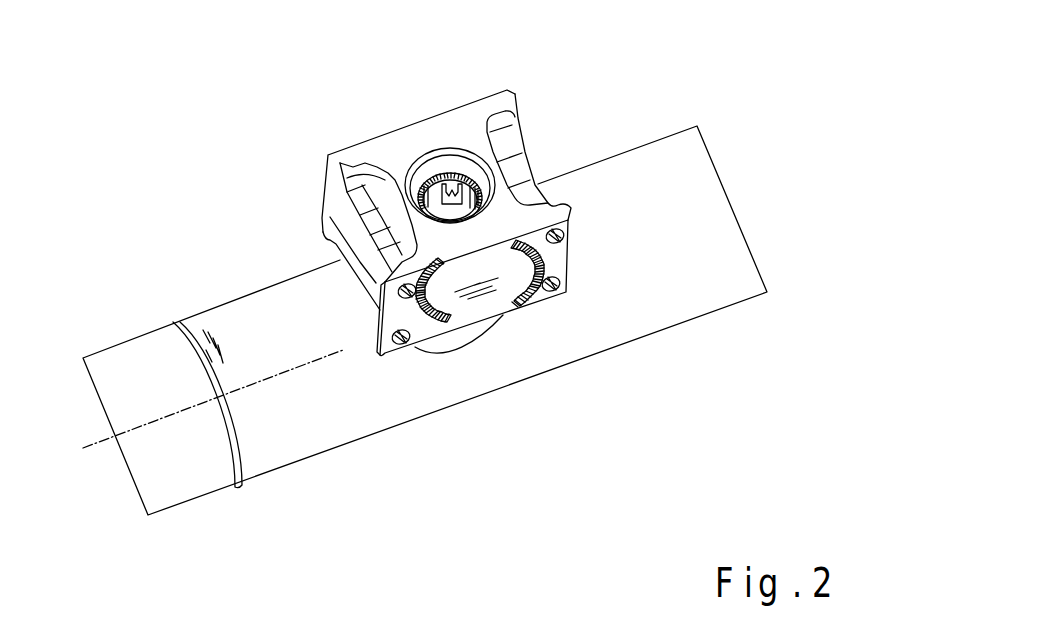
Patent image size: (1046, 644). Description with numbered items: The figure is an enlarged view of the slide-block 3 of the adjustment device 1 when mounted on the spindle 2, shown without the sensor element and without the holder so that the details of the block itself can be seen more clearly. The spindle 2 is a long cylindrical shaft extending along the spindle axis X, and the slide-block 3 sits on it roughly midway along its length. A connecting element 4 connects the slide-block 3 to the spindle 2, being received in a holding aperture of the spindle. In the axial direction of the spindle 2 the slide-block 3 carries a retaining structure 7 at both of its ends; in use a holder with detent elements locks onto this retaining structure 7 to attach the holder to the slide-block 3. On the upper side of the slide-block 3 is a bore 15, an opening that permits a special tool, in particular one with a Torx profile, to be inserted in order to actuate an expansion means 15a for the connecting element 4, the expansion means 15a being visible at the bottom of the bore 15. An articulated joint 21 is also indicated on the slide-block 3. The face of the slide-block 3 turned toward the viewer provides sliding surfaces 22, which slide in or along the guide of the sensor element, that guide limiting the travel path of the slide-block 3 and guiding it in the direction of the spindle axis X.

The adjustment device 1 is at (429, 303).
The spindle 2 is at (302, 420).
The slide-block 3 is at (386, 146).
The connecting element 4 is at (468, 338).
The retaining structure 7 is at (320, 229).
The bore 15 is at (422, 147).
The expansion means 15a is at (450, 180).
The articulated joint 21 is at (554, 156).
The sliding surface 22 is at (510, 91).
The spindle axis X is at (177, 413).